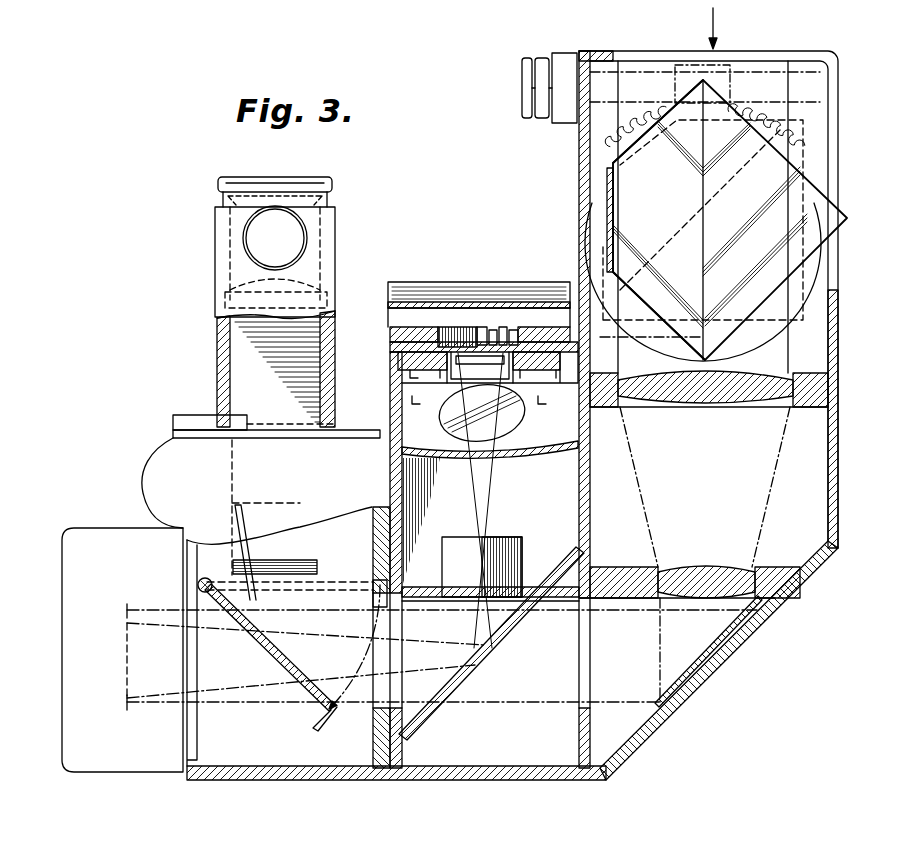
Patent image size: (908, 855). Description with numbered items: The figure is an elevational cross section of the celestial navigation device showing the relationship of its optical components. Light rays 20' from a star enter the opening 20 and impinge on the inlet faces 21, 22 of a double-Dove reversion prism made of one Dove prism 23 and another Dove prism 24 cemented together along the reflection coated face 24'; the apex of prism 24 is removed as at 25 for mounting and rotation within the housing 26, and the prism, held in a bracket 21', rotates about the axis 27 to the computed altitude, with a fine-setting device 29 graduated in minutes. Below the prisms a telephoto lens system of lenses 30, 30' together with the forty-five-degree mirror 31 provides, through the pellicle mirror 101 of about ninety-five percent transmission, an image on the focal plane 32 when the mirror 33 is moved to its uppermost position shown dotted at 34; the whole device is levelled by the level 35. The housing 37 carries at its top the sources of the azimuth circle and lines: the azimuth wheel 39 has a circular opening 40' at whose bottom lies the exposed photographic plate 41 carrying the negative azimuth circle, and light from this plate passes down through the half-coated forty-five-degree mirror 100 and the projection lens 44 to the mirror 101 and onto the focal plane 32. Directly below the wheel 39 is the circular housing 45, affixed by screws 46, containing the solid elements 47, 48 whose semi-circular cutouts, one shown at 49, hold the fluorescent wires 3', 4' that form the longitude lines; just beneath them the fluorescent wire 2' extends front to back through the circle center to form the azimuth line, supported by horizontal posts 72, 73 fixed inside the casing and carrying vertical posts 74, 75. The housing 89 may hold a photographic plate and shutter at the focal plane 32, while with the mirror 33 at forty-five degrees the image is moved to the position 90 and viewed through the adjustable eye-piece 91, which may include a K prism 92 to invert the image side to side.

The opening 20 is at (708, 286).
The light rays 20' is at (727, 28).
The inlet face 21 is at (616, 131).
The bracket 21' is at (616, 300).
The inlet face 22 is at (818, 180).
The Dove prism 23 is at (810, 204).
The Dove prism 24 is at (575, 220).
The reflection coated face 24' is at (704, 220).
The removed apex 25 is at (612, 212).
The housing 26 is at (578, 138).
The axis 27 is at (704, 224).
The fine-setting device 29 is at (520, 90).
The telephoto lens 30 is at (709, 469).
The telephoto lens 30' is at (690, 620).
The 45-degree mirror 31 is at (722, 634).
The focal plane 32 is at (127, 650).
The mirror 33 is at (312, 685).
The uppermost mirror position 34 is at (352, 580).
The level 35 is at (182, 415).
The housing 37 is at (398, 367).
The azimuth wheel 39 is at (392, 328).
The circular opening 40' is at (466, 327).
The fluorescent wire 3' is at (481, 327).
The fluorescent wire 4' is at (493, 327).
The photographic plate 41 is at (492, 362).
The projection lens 44 is at (522, 556).
The circular housing 45 is at (420, 379).
The screws 46 is at (440, 336).
The solid element 47 is at (550, 379).
The solid element 48 is at (398, 356).
The semi-circular cutout 49 is at (515, 345).
The horizontal post 72 is at (421, 406).
The horizontal post 73 is at (548, 406).
The vertical post 74 is at (445, 379).
The vertical post 75 is at (520, 379).
The fluorescent wire 2' is at (480, 372).
The housing 89 is at (62, 612).
The focal plane position 90 is at (285, 503).
The eye-piece 91 is at (333, 184).
The K prism 92 is at (238, 352).
The 45-degree mirror 100 is at (526, 414).
The pellicle mirror 101 is at (500, 628).